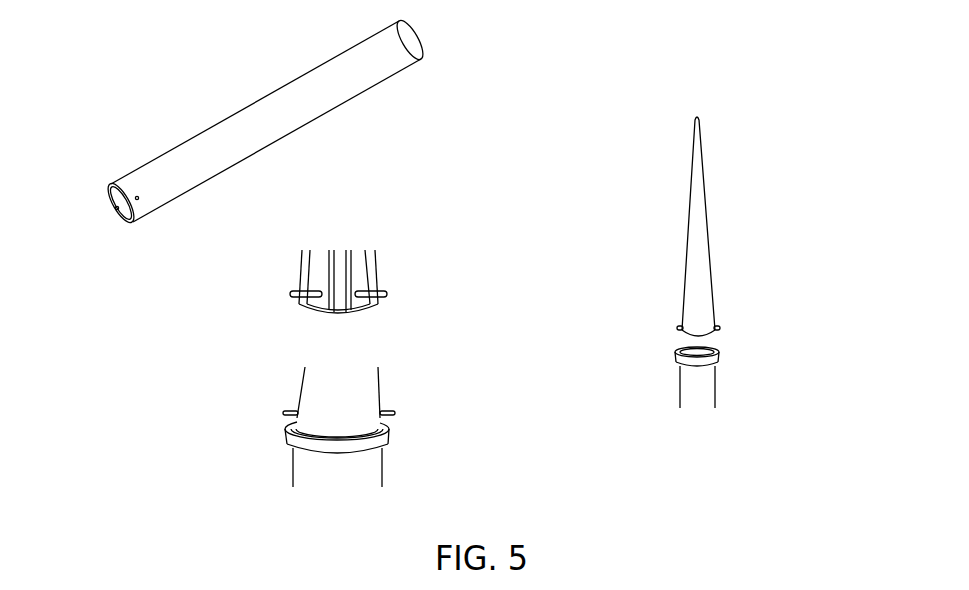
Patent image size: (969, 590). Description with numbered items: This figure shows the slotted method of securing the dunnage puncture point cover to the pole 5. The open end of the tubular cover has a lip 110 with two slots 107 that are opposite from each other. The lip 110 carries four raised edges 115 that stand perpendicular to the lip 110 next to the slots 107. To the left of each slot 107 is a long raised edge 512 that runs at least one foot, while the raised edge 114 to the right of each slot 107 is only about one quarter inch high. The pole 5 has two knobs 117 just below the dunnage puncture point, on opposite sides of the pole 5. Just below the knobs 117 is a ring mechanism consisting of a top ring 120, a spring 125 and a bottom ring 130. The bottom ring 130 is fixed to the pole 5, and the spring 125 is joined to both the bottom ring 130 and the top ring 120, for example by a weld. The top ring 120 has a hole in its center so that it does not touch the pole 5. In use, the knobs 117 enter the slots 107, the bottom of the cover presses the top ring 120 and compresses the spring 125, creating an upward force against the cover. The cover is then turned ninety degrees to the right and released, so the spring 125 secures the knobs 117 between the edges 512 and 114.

The pole 5 is at (698, 402).
The slot 107 is at (116, 209).
The lip 110 is at (113, 183).
The raised edge 114 is at (352, 305).
The raised edges 115 is at (290, 294).
The knob 117 is at (395, 412).
The top ring 120 is at (390, 432).
The spring 125 is at (285, 432).
The bottom ring 130 is at (287, 445).
The raised edge 512 is at (330, 312).